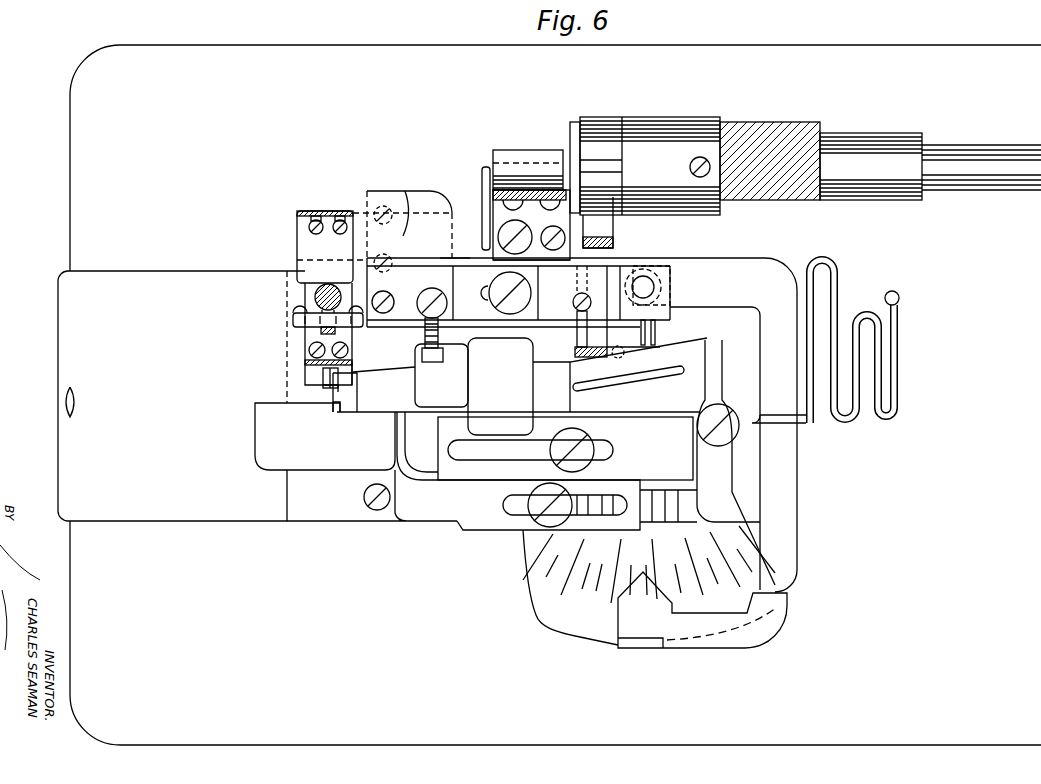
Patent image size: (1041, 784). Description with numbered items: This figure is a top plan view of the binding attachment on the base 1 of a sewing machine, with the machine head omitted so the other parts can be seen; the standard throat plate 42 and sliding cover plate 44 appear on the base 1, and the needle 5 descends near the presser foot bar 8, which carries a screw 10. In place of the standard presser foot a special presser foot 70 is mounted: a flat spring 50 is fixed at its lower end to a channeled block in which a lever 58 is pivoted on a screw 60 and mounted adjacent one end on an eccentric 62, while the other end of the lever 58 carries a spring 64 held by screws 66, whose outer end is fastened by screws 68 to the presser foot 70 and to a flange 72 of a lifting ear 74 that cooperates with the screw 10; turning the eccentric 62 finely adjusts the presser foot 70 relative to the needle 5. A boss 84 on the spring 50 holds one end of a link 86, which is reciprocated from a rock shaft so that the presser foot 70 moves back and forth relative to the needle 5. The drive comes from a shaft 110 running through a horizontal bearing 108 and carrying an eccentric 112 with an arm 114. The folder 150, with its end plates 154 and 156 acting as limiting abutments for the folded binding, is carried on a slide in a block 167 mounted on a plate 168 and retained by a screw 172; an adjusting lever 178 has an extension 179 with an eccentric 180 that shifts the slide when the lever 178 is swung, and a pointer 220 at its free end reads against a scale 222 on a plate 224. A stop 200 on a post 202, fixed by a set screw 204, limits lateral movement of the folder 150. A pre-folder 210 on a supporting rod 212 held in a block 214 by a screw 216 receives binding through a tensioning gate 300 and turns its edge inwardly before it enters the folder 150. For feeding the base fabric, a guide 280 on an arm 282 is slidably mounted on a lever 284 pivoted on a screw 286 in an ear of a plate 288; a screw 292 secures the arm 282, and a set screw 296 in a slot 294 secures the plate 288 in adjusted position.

The base 1 is at (672, 739).
The needle 5 is at (357, 392).
The presser foot bar 8 is at (315, 297).
The screw 10 is at (321, 331).
The throat plate 42 is at (335, 517).
The sliding cover plate 44 is at (72, 347).
The flat spring 50 is at (493, 196).
The lever 58 is at (405, 193).
The screw 60 is at (498, 240).
The eccentric 62 is at (567, 253).
The spring 64 is at (317, 267).
The screws 66 is at (331, 211).
The screws 68 is at (309, 350).
The presser foot 70 is at (312, 371).
The flange 72 is at (350, 346).
The lifting ear 74 is at (293, 319).
The boss 84 is at (528, 151).
The link 86 is at (485, 170).
The horizontal bearing 108 is at (792, 133).
The shaft 110 is at (988, 152).
The eccentric 112 is at (598, 125).
The arm 114 is at (613, 236).
The folder 150 is at (500, 386).
The end plate 154 is at (326, 387).
The end plate 156 is at (333, 411).
The block 167 is at (467, 258).
The plate 168 is at (381, 206).
The screw 172 is at (492, 288).
The lever 178 is at (760, 263).
The extension 179 is at (648, 276).
The eccentric 180 is at (668, 292).
The stop 200 is at (423, 352).
The post 202 is at (386, 292).
The set screw 204 is at (432, 289).
The folder 210 is at (688, 346).
The supporting rod 212 is at (574, 349).
The block 214 is at (598, 317).
The screw 216 is at (577, 298).
The pointer 220 is at (625, 627).
The scale 222 is at (548, 566).
The plate 224 is at (546, 629).
The guide 280 is at (271, 462).
The arm 282 is at (462, 517).
The lever 284 is at (723, 482).
The screw 286 is at (741, 431).
The plate 288 is at (565, 448).
The screw 292 is at (528, 518).
The slot 294 is at (492, 456).
The set screw 296 is at (597, 463).
The tensioning gate 300 is at (900, 373).